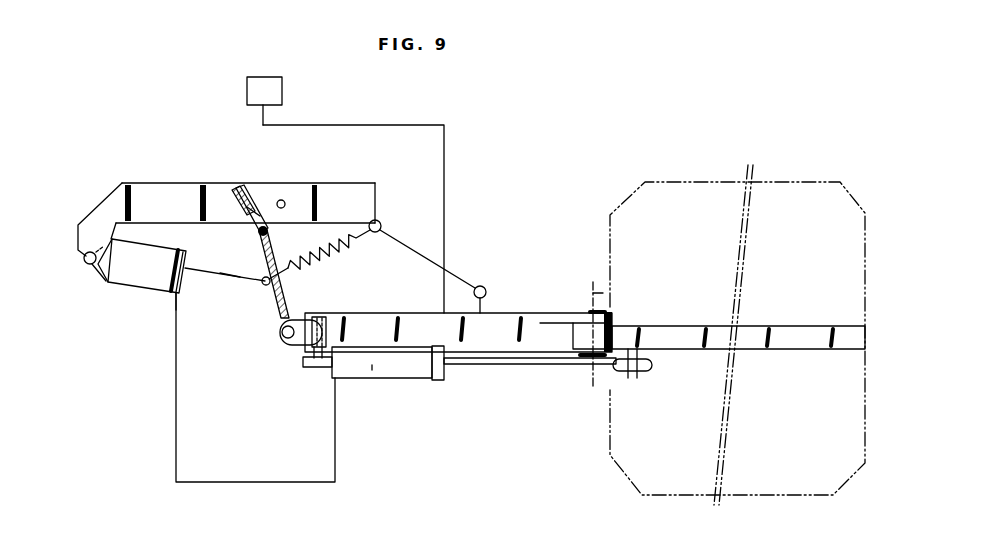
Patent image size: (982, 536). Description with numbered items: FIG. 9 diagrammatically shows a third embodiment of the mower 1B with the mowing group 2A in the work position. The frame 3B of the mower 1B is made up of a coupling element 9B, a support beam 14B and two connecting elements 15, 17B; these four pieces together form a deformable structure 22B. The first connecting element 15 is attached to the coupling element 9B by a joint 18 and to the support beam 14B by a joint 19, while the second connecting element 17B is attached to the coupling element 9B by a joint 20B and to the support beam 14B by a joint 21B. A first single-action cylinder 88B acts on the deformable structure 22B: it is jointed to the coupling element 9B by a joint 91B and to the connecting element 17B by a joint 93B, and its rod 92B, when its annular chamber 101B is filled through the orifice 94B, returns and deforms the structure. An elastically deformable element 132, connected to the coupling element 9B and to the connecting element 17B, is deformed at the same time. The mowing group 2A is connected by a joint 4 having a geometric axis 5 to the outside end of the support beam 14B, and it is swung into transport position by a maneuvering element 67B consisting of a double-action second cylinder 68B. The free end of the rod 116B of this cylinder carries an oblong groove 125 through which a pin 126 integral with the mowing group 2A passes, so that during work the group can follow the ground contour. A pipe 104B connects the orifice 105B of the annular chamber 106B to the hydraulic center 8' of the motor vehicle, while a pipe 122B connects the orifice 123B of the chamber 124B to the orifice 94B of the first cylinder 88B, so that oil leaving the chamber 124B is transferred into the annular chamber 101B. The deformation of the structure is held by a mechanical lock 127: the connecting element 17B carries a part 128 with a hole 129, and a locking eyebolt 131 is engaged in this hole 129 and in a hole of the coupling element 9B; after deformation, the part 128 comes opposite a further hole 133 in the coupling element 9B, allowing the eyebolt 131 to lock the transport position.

The mower 1B is at (519, 241).
The mowing group 2A is at (793, 325).
The frame 3B is at (116, 181).
The joint 4 is at (592, 312).
The geometric axis 5 is at (602, 294).
The hydraulic center 8' is at (264, 86).
The coupling element 9B is at (376, 183).
The support beam 14B is at (351, 320).
The first connecting element 15 is at (410, 248).
The second connecting element 17B is at (264, 285).
The joint 18 is at (380, 222).
The joint 19 is at (481, 286).
The joint 20B is at (261, 239).
The joint 21B is at (282, 341).
The deformable structure 22B is at (417, 297).
The maneuvering element 67B is at (432, 386).
The second cylinder 68B is at (405, 379).
The first single-action cylinder 88B is at (129, 287).
The joint 91B is at (86, 263).
The rod 92B is at (230, 279).
The joint 93B is at (271, 283).
The orifice 94B is at (175, 296).
The annular chamber 101B is at (180, 285).
The pipe 104B is at (444, 207).
The orifice 105B is at (400, 318).
The annular chamber 106B is at (446, 370).
The rod 116B is at (552, 366).
The pipe 122B is at (176, 401).
The orifice 123B is at (332, 380).
The chamber 124B is at (372, 372).
The oblong groove 125 is at (652, 367).
The pin 126 is at (632, 378).
The mechanical lock 127 is at (253, 184).
The part 128 is at (254, 212).
The hole 129 is at (259, 234).
The locking eyebolt 131 is at (241, 187).
The elastically deformable element 132 is at (322, 260).
The hole 133 is at (282, 209).